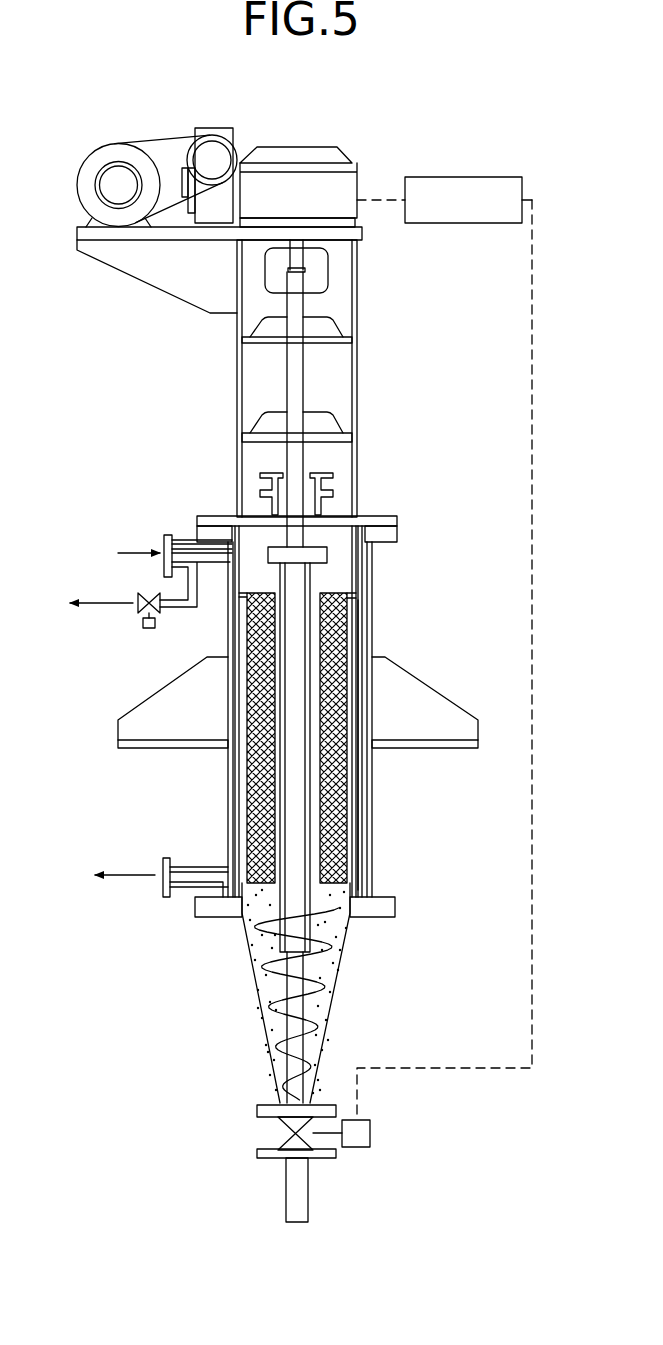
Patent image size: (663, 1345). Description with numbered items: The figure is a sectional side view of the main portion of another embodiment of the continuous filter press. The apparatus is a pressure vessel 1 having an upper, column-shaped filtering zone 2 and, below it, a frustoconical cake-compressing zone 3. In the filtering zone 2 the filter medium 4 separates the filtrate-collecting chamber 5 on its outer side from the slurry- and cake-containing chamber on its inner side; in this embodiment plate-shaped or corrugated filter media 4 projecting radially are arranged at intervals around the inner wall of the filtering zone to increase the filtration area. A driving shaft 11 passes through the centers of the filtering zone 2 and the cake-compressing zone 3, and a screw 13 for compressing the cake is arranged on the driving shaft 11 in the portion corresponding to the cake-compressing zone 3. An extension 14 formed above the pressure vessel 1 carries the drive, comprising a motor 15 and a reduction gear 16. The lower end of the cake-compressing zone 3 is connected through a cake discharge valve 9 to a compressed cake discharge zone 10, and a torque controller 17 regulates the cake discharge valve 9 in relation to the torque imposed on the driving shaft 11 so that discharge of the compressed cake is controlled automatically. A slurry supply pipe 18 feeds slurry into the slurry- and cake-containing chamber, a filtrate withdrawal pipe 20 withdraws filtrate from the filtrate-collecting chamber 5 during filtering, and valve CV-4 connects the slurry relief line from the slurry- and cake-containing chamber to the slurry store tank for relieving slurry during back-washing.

The pressure vessel 1 is at (400, 625).
The filtering zone 2 is at (227, 640).
The cake-compressing zone 3 is at (348, 965).
The filter medium 4 is at (262, 765).
The filtrate-collecting chamber 5 is at (357, 818).
The cake discharge valve 9 is at (290, 1132).
The compressed cake discharge zone 10 is at (295, 1193).
The driving shaft 11 is at (292, 783).
The screw 13 is at (277, 1027).
The extension 14 is at (357, 370).
The motor 15 is at (98, 150).
The reduction gear 16 is at (322, 142).
The torque controller 17 is at (492, 177).
The slurry supply pipe 18 is at (192, 540).
The filtrate withdrawal pipe 20 is at (200, 867).
The valve CV-4 is at (142, 612).